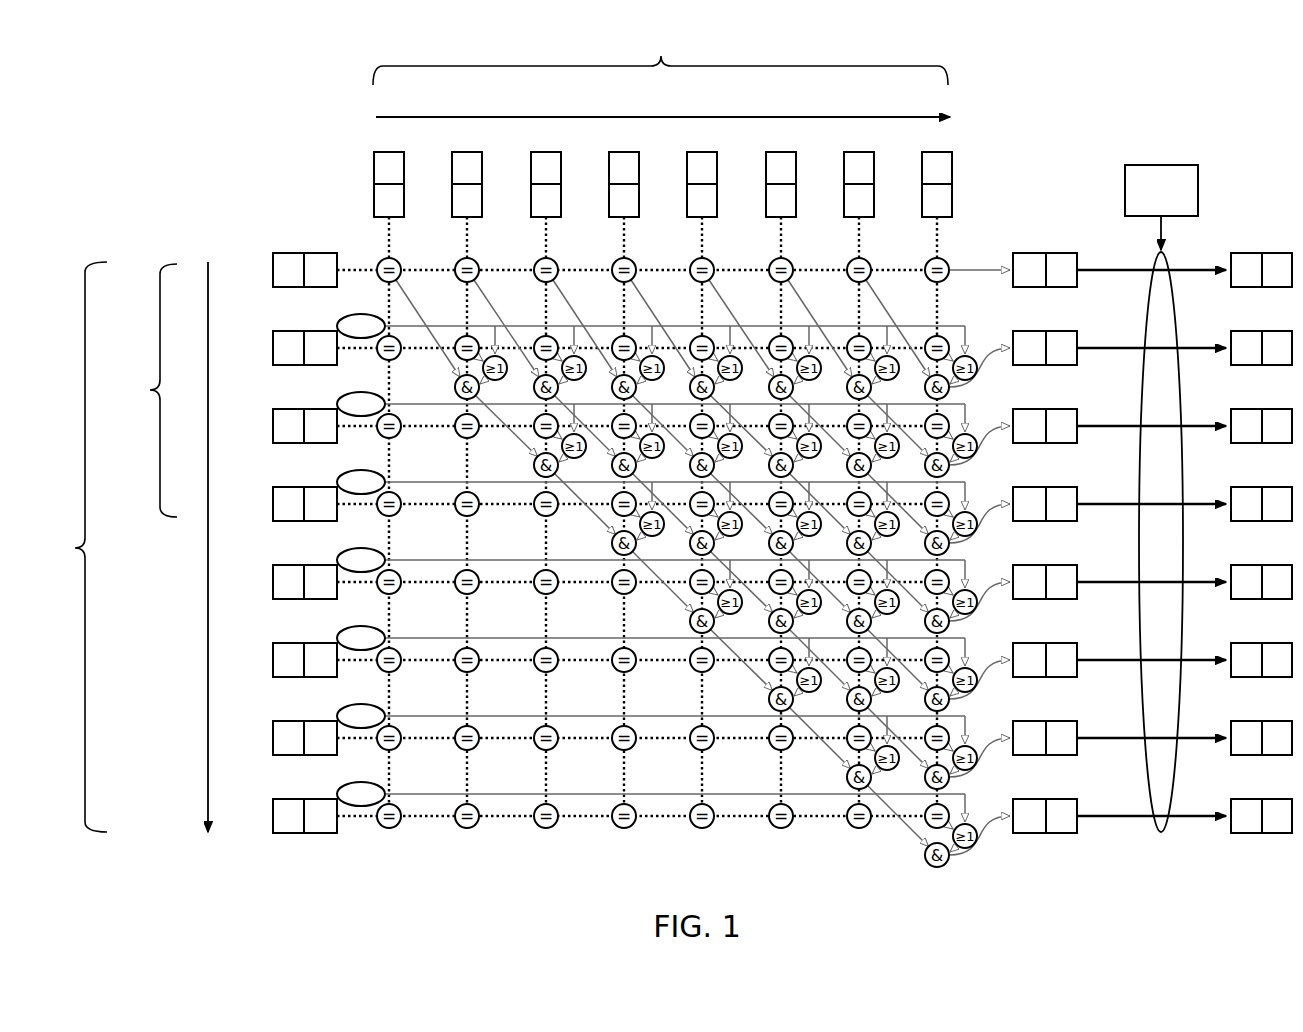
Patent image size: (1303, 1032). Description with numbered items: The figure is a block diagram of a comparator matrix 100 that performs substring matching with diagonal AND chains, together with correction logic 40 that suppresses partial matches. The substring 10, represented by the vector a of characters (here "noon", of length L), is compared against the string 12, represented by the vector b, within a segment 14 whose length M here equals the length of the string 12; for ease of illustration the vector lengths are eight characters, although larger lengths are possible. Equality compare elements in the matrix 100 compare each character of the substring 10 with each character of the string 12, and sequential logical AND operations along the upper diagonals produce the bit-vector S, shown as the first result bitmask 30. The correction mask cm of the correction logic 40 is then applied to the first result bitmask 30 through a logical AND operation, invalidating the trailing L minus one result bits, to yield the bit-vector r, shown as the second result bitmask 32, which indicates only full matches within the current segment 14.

The comparator matrix 100 is at (668, 441).
The substring 10 is at (278, 248).
The string 12 is at (368, 176).
The segment 14 is at (660, 51).
The first result bitmask 30 is at (1028, 246).
The second result bitmask 32 is at (1246, 244).
The correction logic 40 is at (1150, 165).